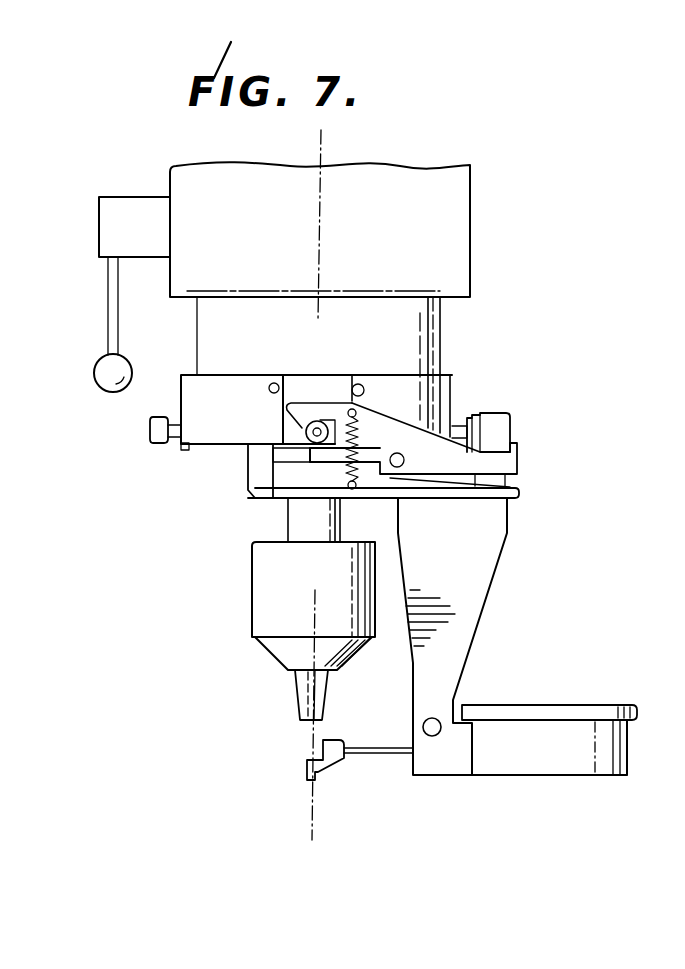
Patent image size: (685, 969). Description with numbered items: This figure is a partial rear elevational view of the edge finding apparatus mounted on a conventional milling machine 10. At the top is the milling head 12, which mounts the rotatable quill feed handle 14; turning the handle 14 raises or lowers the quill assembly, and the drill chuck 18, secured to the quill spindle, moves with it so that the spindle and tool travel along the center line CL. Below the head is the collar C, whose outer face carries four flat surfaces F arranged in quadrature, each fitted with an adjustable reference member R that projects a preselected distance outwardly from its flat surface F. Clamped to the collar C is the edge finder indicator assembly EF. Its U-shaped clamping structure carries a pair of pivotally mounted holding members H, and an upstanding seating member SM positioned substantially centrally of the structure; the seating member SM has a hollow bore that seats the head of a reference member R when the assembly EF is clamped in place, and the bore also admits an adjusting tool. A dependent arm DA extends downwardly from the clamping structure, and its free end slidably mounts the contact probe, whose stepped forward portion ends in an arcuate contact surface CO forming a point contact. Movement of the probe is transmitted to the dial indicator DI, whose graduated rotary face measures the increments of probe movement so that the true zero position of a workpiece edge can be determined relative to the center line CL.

The milling machine 10 is at (200, 509).
The milling head 12 is at (444, 219).
The quill feed handle 14 is at (100, 372).
The drill chuck 18 is at (252, 590).
The center line CL is at (322, 242).
The reference member R is at (150, 441).
The flat surface F is at (302, 384).
The holding member H is at (392, 420).
The collar C is at (459, 384).
The seating member SM is at (505, 418).
The edge finder indicator assembly EF is at (522, 458).
The dependent arm DA is at (480, 590).
The dial indicator DI is at (588, 702).
The arcuate contact surface CO is at (307, 768).